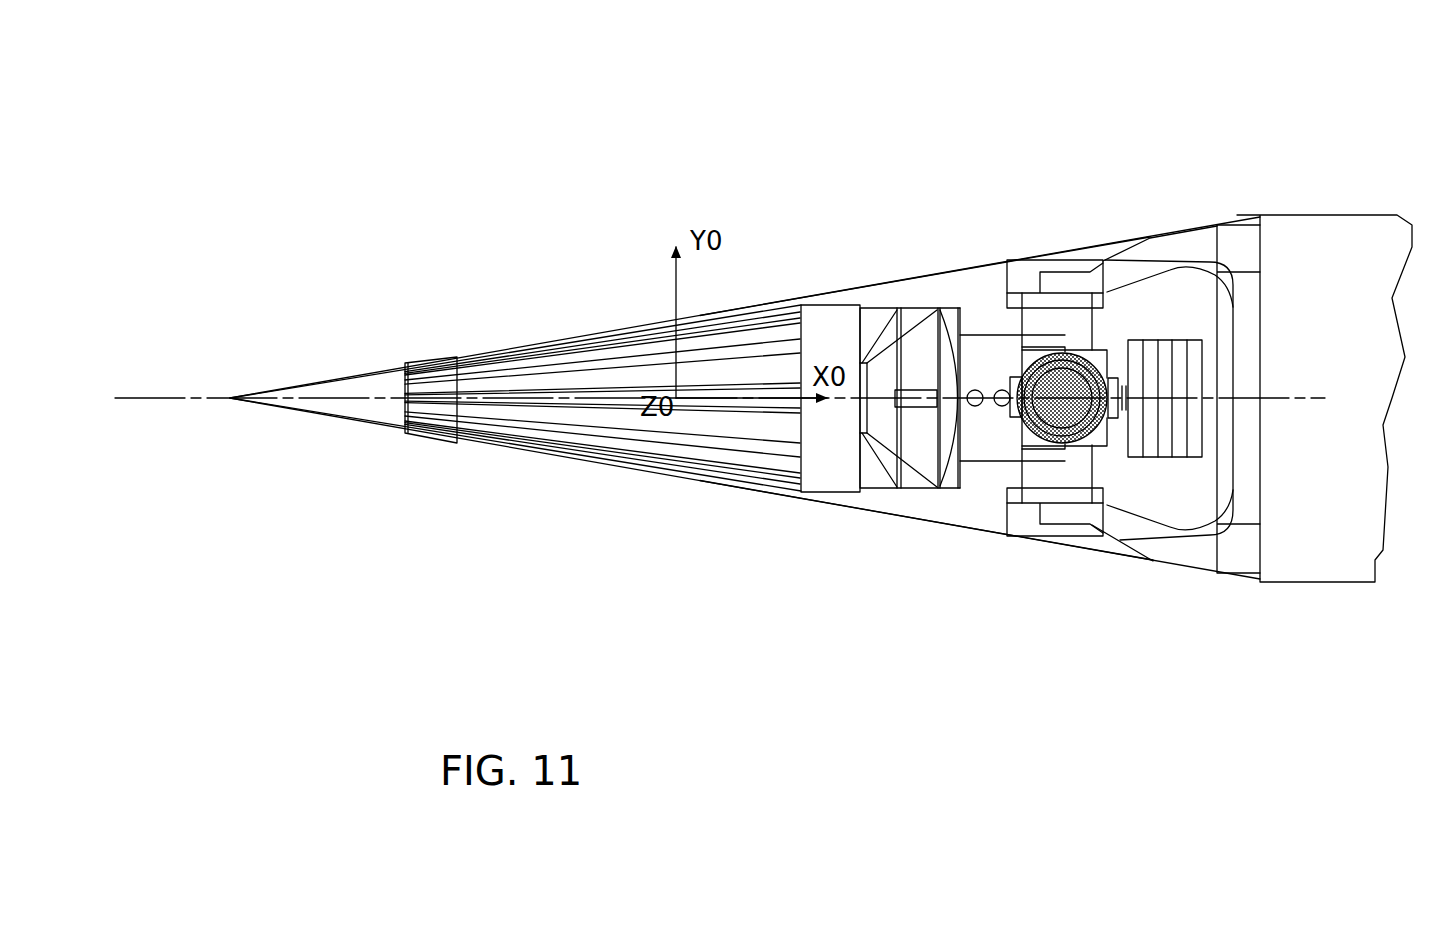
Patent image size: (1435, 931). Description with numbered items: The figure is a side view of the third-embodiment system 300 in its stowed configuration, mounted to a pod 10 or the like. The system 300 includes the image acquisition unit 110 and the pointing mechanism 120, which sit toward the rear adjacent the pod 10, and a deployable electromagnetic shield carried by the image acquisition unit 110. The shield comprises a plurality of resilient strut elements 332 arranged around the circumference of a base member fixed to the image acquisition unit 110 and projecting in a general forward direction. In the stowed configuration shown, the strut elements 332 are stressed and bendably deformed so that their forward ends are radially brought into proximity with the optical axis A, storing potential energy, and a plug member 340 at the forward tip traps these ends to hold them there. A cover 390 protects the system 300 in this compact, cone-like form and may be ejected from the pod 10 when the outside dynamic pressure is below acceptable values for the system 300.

The system 300 is at (1005, 158).
The pod 10 is at (1316, 583).
The image acquisition unit 110 is at (953, 492).
The pointing mechanism 120 is at (1178, 553).
The resilient strut elements 332 is at (597, 437).
The plug member 340 is at (437, 443).
The cover 390 is at (868, 509).
The optical axis A is at (152, 400).